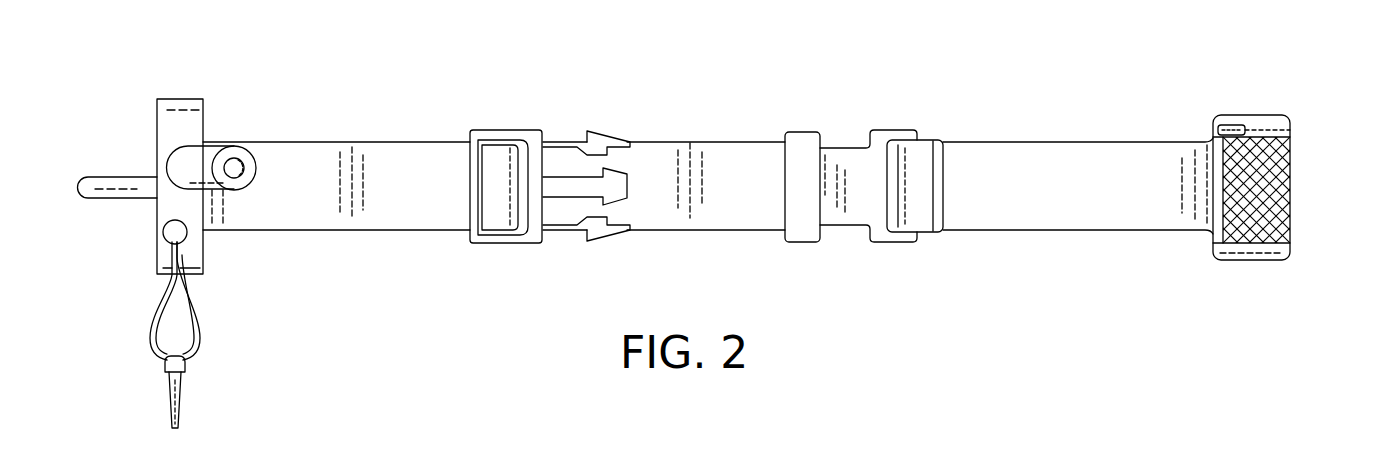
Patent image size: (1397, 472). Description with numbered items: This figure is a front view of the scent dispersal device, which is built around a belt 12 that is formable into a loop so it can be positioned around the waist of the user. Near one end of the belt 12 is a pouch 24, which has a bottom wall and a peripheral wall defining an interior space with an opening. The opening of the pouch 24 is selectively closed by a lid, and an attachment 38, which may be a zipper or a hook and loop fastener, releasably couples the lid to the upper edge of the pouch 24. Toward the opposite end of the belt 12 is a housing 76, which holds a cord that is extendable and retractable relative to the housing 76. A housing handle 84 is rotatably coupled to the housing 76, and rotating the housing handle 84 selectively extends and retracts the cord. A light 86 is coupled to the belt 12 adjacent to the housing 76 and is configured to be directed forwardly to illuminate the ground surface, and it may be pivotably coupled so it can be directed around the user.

The belt 12 is at (718, 160).
The pouch 24 is at (1275, 113).
The attachment 38 is at (1292, 132).
The housing 76 is at (181, 112).
The housing handle 84 is at (78, 188).
The light 86 is at (207, 152).